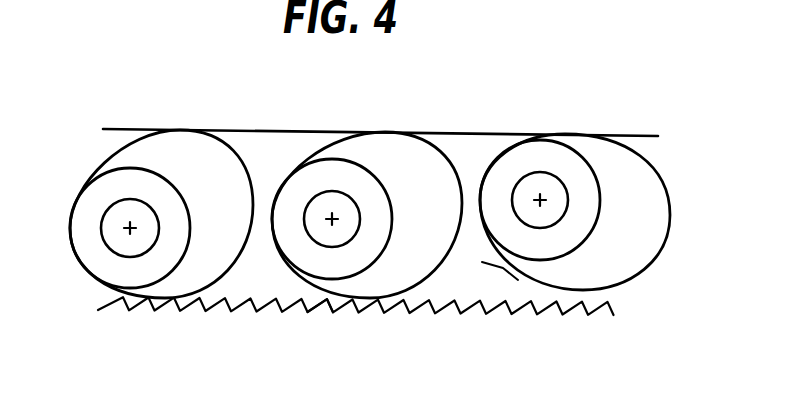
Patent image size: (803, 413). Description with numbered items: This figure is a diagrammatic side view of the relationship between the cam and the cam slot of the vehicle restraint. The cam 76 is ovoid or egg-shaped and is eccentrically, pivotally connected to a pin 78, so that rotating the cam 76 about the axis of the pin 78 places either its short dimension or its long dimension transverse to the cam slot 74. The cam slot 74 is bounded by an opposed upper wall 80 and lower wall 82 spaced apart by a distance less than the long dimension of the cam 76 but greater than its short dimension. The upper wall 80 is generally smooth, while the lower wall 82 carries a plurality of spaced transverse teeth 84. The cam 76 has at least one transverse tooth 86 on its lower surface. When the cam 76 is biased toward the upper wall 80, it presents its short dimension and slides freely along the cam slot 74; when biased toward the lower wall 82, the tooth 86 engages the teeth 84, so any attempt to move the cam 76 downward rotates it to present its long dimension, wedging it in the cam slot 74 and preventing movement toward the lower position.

The cam slot 74 is at (283, 148).
The cam 76 is at (200, 150).
The pin 78 is at (547, 183).
The upper wall 80 is at (466, 135).
The lower wall 82 is at (472, 300).
The transverse teeth 84 is at (323, 300).
The transverse tooth 86 is at (485, 262).